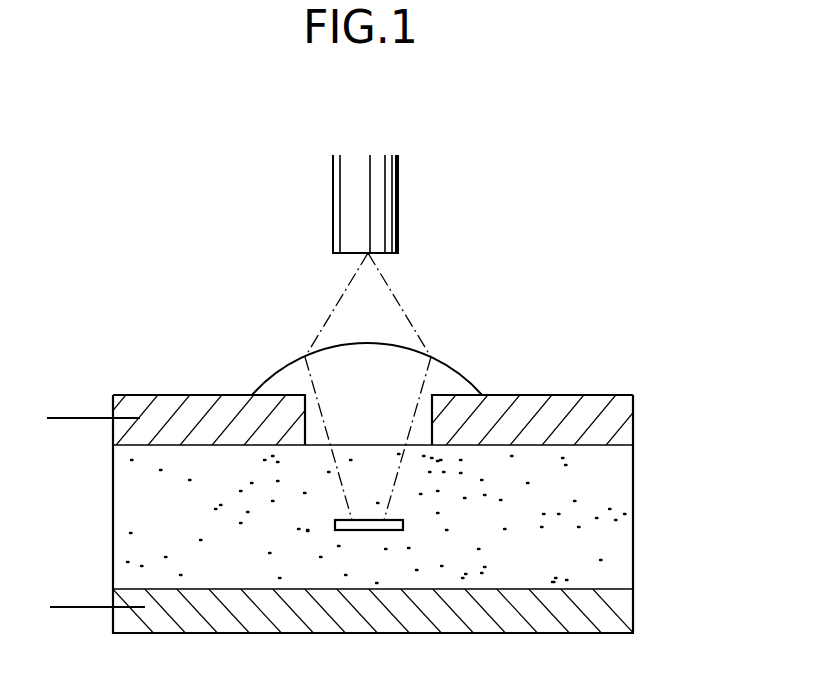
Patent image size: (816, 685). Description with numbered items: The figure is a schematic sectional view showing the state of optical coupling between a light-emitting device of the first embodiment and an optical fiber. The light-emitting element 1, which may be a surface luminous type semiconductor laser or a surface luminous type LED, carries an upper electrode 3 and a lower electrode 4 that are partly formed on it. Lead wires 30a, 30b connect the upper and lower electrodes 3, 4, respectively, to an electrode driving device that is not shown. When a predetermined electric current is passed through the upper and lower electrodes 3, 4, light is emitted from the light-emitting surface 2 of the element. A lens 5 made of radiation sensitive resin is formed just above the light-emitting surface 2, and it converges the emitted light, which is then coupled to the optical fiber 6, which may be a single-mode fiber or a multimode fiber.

The light-emitting element 1 is at (617, 527).
The light-emitting surface 2 is at (367, 528).
The upper electrode 3 is at (620, 420).
The lower electrode 4 is at (627, 613).
The lens 5 is at (451, 373).
The optical fiber 6 is at (335, 200).
The lead wire 30a is at (73, 420).
The lead wire 30b is at (73, 610).